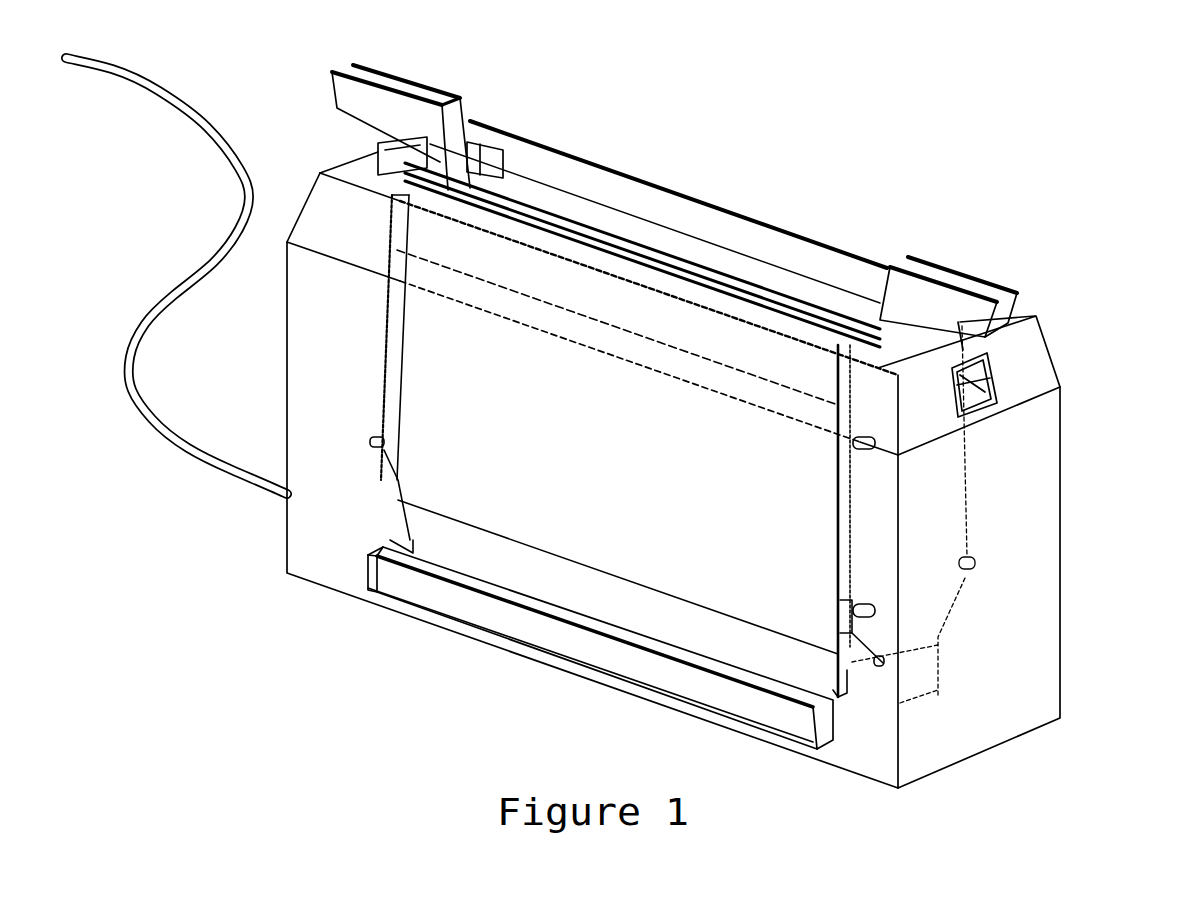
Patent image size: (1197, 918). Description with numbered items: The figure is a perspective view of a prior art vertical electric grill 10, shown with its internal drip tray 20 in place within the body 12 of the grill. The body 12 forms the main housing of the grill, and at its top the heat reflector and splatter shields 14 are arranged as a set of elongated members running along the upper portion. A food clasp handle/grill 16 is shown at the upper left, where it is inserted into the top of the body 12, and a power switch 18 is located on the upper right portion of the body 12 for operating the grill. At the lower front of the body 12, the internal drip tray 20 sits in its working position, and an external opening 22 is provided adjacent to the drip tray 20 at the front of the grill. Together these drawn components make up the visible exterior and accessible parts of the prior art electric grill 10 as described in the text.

The vertical electric grill 10 is at (947, 123).
The body 12 is at (1017, 510).
The heat reflector and splatter shields 14 is at (587, 230).
The food clasp handle/grill 16 is at (390, 108).
The power switch 18 is at (963, 370).
The internal drip tray 20 is at (437, 597).
The external opening 22 is at (513, 640).